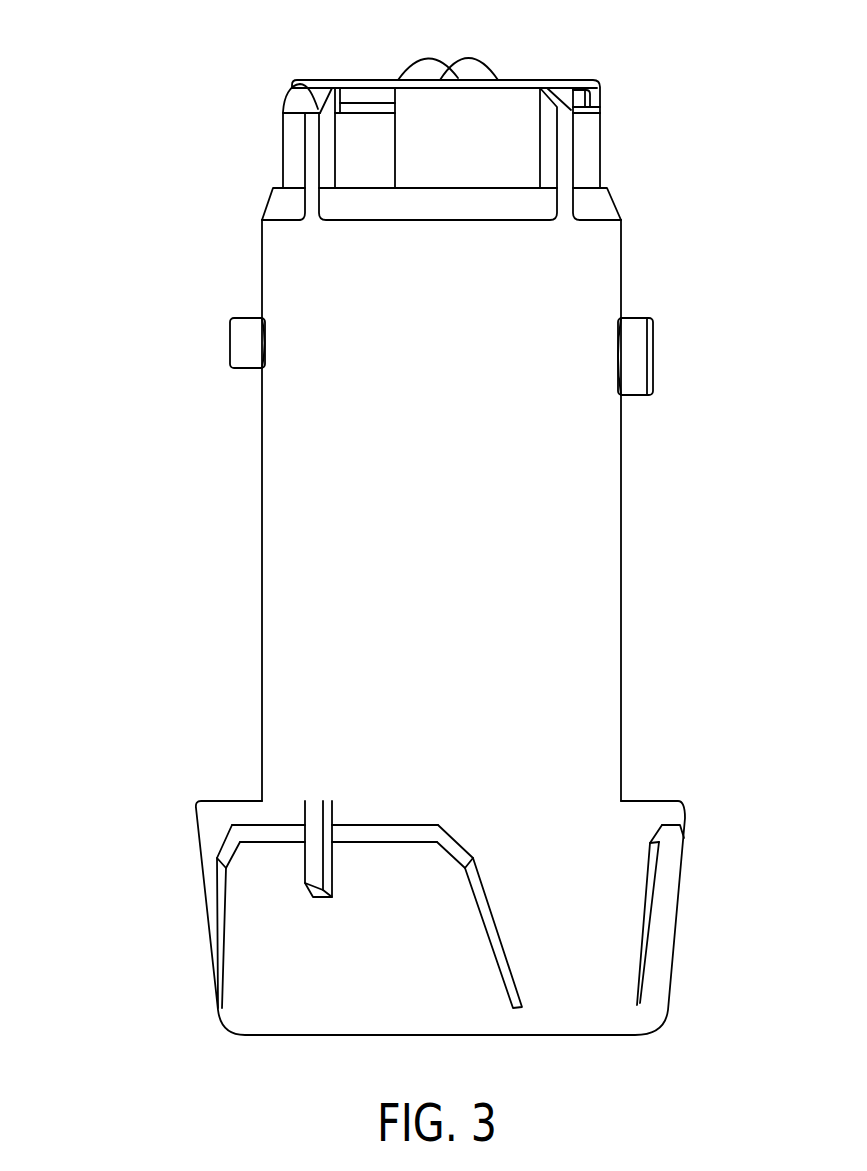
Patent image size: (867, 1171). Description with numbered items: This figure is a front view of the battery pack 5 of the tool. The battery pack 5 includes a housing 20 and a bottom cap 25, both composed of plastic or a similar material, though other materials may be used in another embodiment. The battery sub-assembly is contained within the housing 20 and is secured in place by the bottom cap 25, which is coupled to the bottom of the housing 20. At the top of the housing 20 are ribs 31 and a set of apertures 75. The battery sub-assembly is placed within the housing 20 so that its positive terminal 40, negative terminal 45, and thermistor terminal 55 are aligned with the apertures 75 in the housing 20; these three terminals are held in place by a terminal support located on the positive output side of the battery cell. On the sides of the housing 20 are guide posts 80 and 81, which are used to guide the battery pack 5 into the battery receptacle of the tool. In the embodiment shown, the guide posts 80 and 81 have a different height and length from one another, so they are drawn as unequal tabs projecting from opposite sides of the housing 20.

The battery pack 5 is at (127, 190).
The housing 20 is at (276, 626).
The bottom cap 25 is at (660, 907).
The ribs 31 is at (312, 160).
The positive terminal 40 is at (587, 135).
The negative terminal 45 is at (283, 128).
The thermistor terminal 55 is at (357, 117).
The apertures 75 is at (285, 104).
The guide post 80 is at (250, 339).
The guide post 81 is at (637, 343).